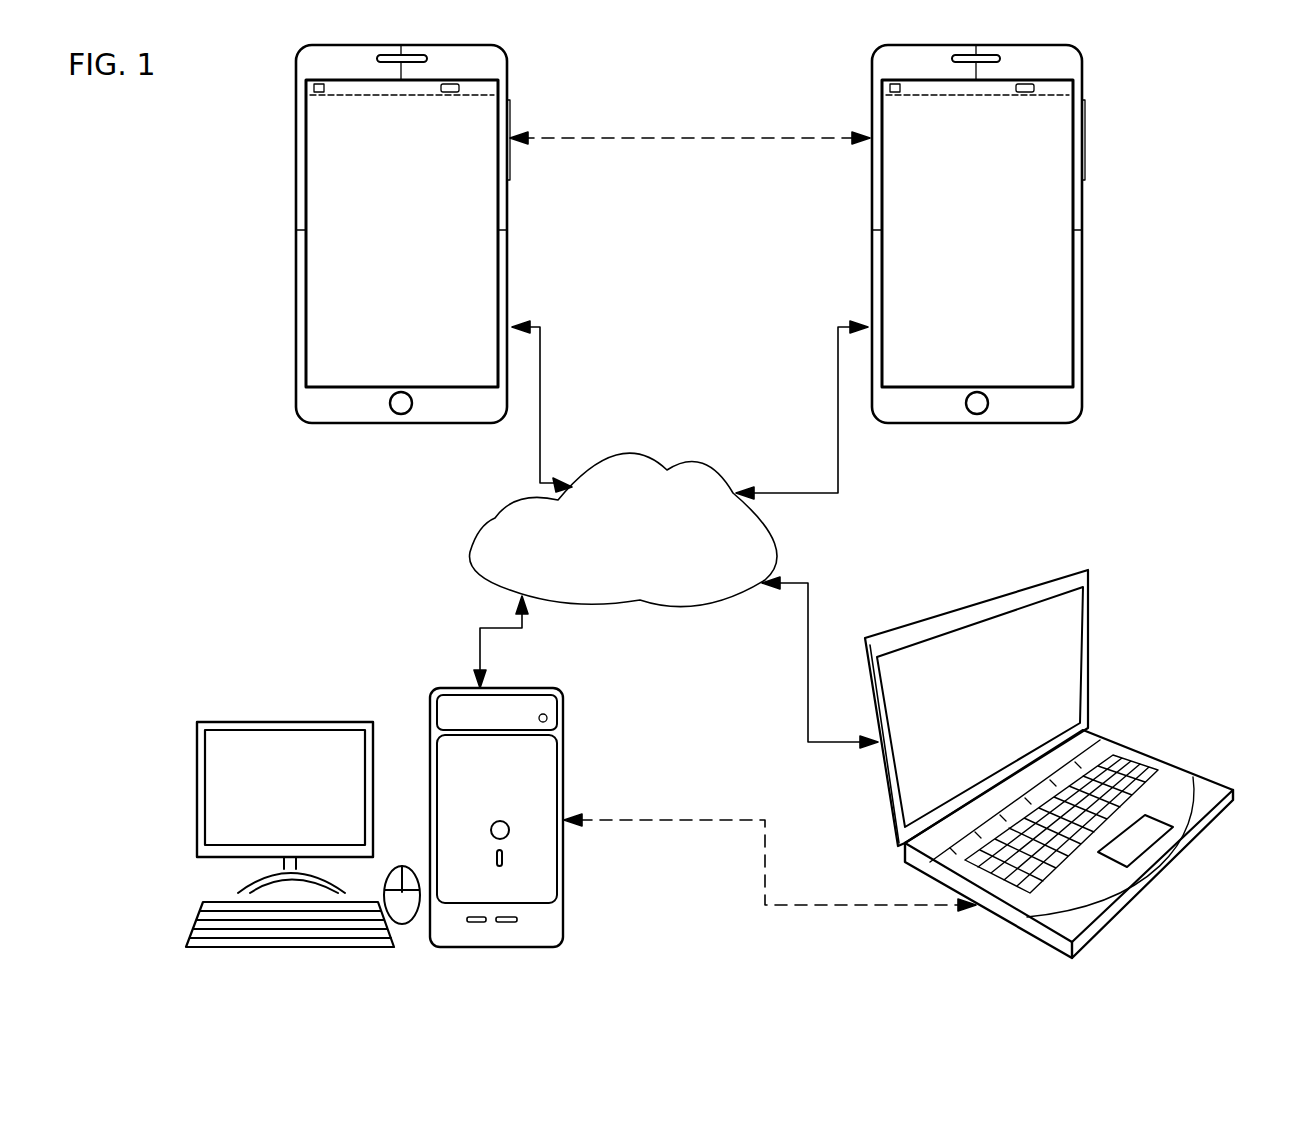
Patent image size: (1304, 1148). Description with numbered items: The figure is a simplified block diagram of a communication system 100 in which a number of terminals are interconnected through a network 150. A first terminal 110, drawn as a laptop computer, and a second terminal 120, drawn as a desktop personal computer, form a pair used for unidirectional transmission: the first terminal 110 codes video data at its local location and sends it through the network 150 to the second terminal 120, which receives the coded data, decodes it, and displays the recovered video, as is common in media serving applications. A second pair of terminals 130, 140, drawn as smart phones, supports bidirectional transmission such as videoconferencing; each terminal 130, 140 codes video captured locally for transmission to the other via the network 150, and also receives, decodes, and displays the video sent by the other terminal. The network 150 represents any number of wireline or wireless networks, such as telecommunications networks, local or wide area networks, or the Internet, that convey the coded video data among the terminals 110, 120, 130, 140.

The communication system 100 is at (219, 116).
The first terminal 110 is at (1090, 628).
The second terminal 120 is at (563, 907).
The terminal 130 is at (297, 172).
The terminal 140 is at (873, 172).
The network 150 is at (642, 528).